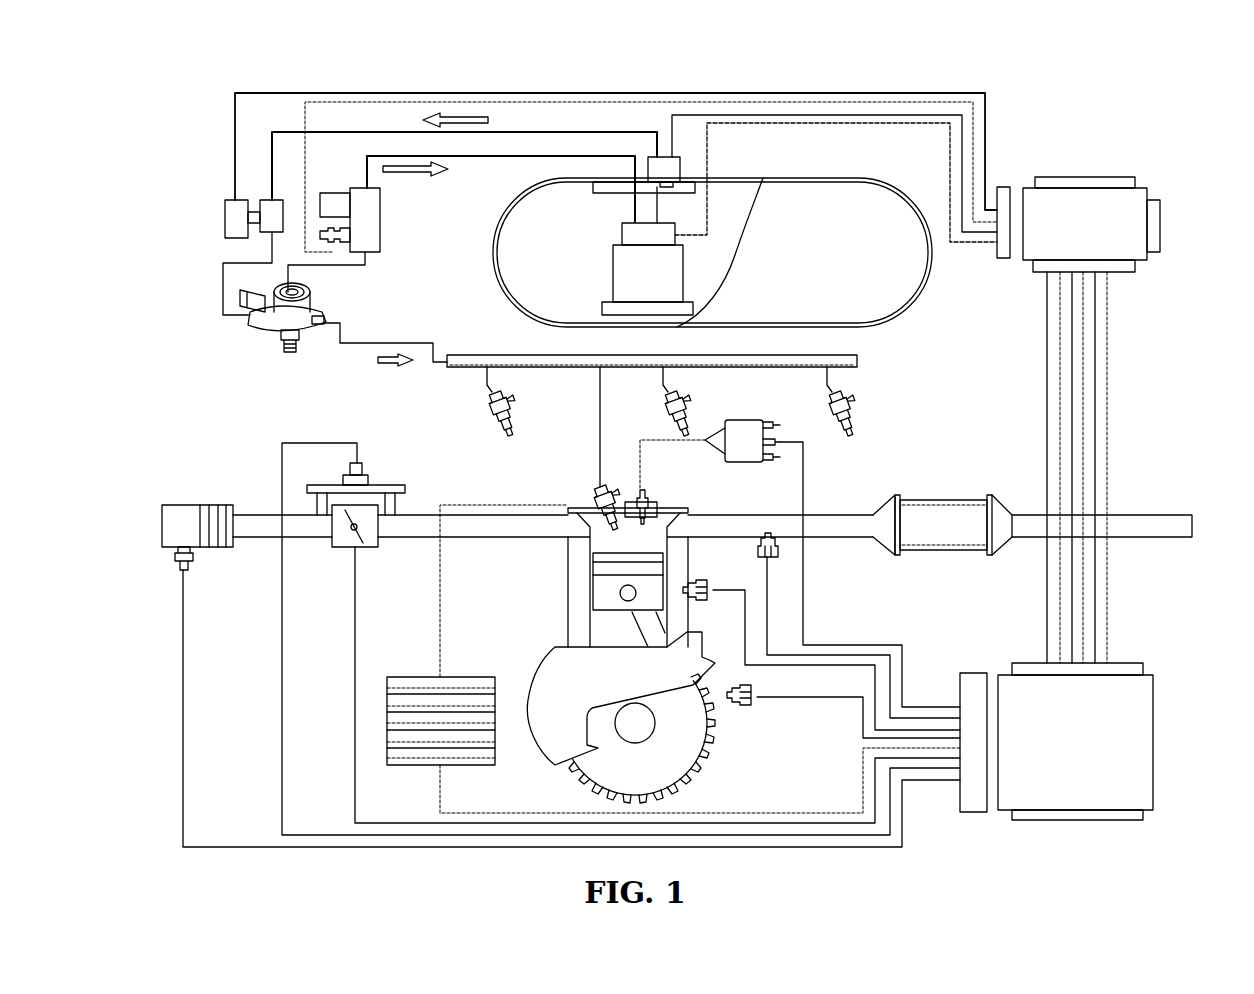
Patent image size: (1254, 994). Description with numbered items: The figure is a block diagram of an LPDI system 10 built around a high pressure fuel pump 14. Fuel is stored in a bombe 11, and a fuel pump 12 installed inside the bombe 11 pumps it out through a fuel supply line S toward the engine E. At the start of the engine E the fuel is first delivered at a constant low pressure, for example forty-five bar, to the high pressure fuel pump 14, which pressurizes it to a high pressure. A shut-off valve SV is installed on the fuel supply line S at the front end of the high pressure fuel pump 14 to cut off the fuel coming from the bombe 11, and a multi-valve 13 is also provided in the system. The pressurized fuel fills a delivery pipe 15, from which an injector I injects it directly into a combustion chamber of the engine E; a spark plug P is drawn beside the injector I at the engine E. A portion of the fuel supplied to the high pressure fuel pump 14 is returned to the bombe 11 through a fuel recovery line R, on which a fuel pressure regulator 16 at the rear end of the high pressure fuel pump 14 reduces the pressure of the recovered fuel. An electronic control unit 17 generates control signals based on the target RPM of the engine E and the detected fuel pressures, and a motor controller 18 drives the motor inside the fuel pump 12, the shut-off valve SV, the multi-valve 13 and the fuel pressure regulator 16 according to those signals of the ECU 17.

The LPDI system 10 is at (1145, 64).
The bombe 11 is at (843, 183).
The fuel pump 12 is at (620, 273).
The multi-valve 13 is at (662, 155).
The high pressure fuel pump 14 is at (272, 333).
The delivery pipe 15 is at (475, 355).
The fuel pressure regulator 16 is at (372, 227).
The electronic control unit 17 is at (1153, 747).
The motor controller 18 is at (1160, 224).
The fuel supply line S is at (353, 133).
The fuel recovery line R is at (527, 156).
The shut-off valve SV is at (225, 222).
The injector I is at (595, 498).
The spark plug P is at (648, 500).
The engine E is at (570, 590).